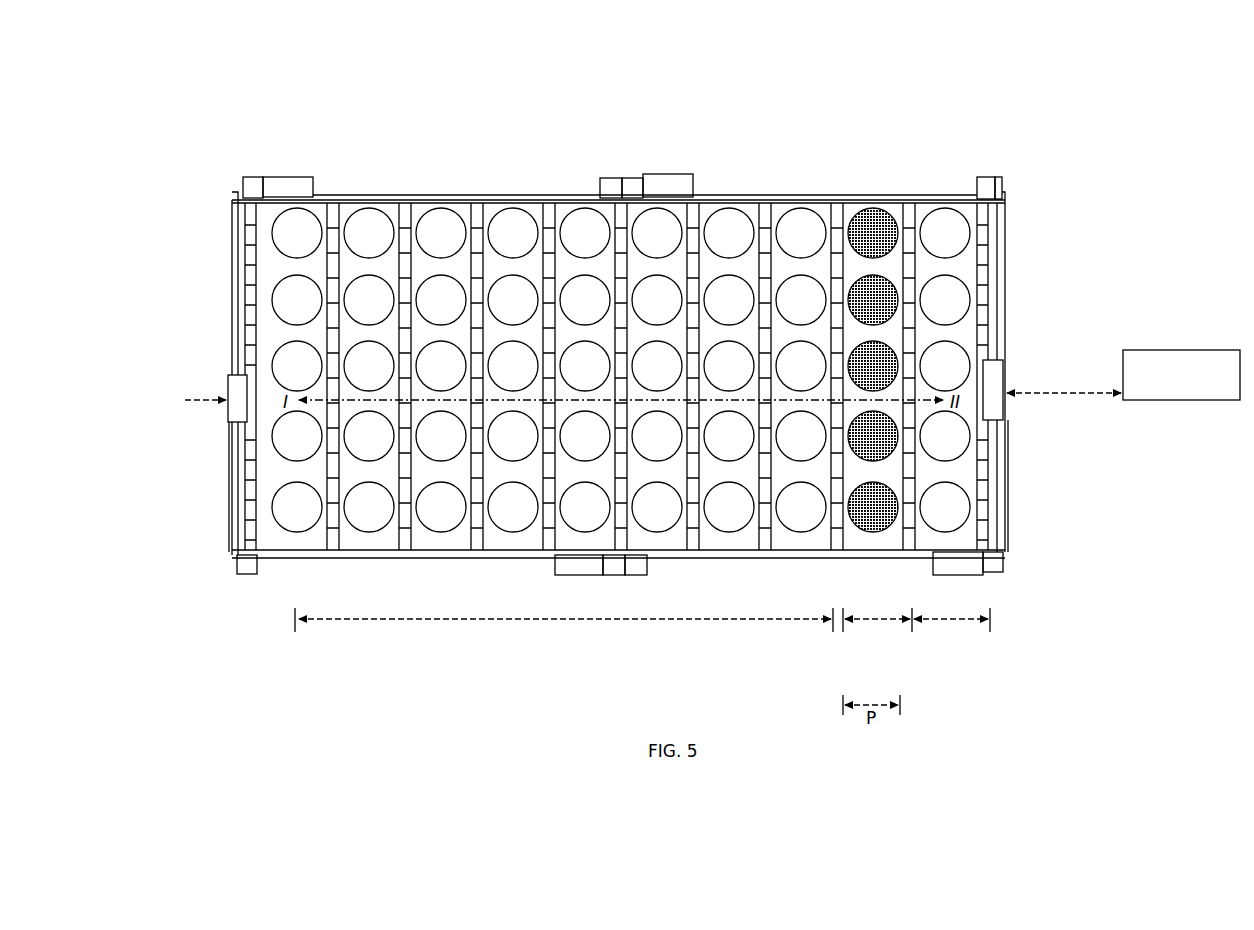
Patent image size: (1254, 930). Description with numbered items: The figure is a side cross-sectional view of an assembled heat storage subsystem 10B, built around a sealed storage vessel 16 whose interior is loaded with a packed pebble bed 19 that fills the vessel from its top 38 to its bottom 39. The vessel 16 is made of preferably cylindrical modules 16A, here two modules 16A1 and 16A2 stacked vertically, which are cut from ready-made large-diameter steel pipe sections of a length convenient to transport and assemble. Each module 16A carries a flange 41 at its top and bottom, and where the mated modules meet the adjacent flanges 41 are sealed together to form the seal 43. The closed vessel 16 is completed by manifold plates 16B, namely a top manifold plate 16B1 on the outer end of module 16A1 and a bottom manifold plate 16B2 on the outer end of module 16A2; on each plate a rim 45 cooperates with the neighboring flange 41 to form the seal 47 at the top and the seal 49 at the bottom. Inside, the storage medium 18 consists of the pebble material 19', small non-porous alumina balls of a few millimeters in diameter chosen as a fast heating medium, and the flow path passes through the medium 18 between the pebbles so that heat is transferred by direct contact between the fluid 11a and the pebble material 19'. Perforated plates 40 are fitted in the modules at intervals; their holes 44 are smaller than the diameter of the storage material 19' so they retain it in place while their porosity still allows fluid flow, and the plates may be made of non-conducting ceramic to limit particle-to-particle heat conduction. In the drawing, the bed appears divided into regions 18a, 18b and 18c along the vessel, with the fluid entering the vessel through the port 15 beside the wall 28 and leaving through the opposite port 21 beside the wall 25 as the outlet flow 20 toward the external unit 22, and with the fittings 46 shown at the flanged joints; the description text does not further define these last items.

The battery module 10B is at (260, 101).
The storage vessel 16 is at (958, 186).
The cylindrical module 16A is at (566, 146).
The first module 16A1 is at (528, 198).
The second module 16A2 is at (876, 198).
The manifold plate module 16B is at (228, 222).
The top manifold plate 16B1 is at (236, 262).
The bottom manifold plate 16B2 is at (1005, 330).
The medium 18 is at (441, 275).
The packed pebble bed 19 is at (893, 349).
The pebble material 19' is at (798, 320).
The perforated plate 40 is at (600, 478).
The hole 44 is at (620, 495).
The flange 41 is at (265, 178).
The seal 43 is at (628, 172).
The manifold plate rim 45 is at (237, 196).
The block 46 is at (300, 178).
The seal 47 is at (243, 178).
The seal 49 is at (998, 178).
The inlet port 15 is at (212, 389).
The left wall 28 is at (203, 487).
The top 38 is at (214, 554).
The fluid 11a is at (162, 404).
The outlet port 21 is at (1018, 383).
The right wall 25 is at (1031, 486).
The bottom 39 is at (1018, 556).
The outlet flow 20 is at (1064, 407).
The heat exchanger 22 is at (1165, 404).
The first cell region 18a is at (546, 664).
The second cell region 18b is at (874, 664).
The third cell region 18c is at (946, 664).